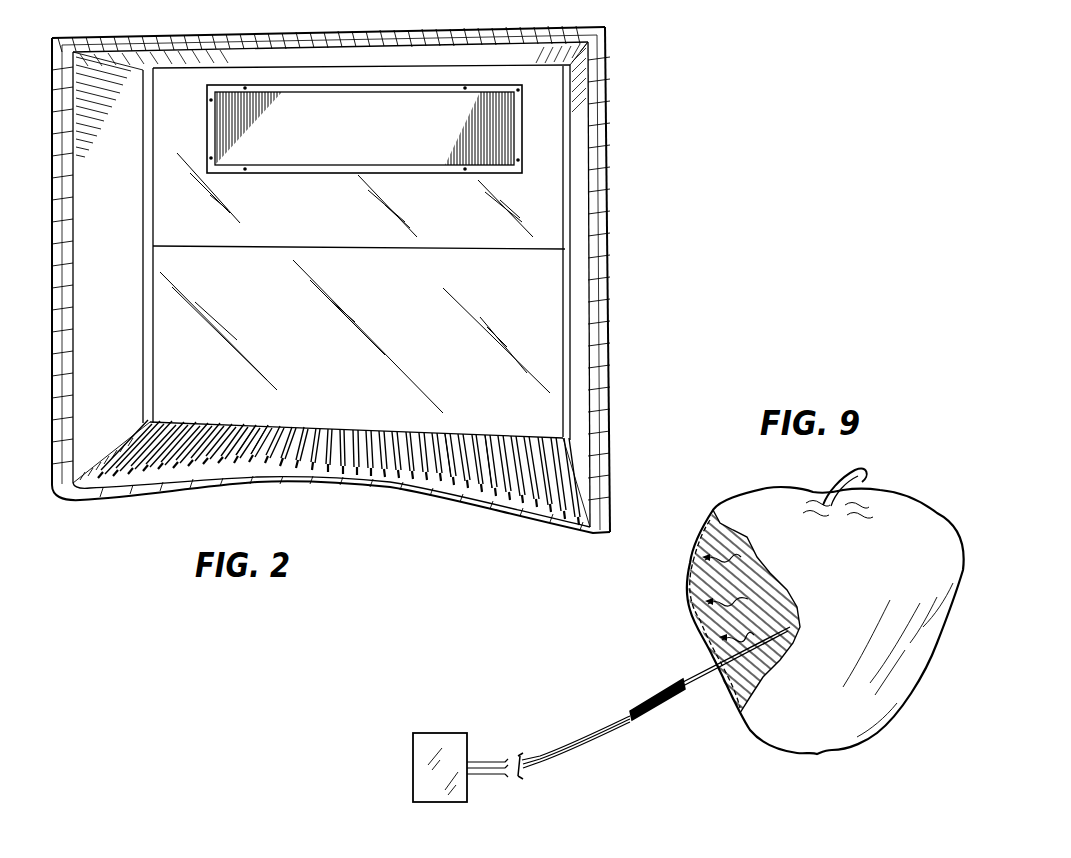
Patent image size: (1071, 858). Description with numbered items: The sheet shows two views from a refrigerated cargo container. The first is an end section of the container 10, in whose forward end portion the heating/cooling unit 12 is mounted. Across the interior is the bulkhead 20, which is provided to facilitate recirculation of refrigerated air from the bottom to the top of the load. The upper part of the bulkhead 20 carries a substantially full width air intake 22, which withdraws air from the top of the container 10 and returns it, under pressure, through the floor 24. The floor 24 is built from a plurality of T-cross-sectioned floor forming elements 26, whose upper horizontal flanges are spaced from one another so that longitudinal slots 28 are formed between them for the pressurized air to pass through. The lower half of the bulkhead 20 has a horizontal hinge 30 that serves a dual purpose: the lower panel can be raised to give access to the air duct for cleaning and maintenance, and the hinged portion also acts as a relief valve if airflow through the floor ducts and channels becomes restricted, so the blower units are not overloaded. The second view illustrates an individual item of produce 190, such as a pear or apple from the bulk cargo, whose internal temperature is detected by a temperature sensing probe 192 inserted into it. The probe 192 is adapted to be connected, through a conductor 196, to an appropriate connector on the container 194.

In FIG. 2, the container 10 is at (634, 70).
In FIG. 2, the heating/cooling unit 12 is at (538, 217).
In FIG. 2, the bulkhead 20 is at (333, 225).
In FIG. 2, the air intake 22 is at (433, 147).
In FIG. 2, the floor 24 is at (368, 428).
In FIG. 2, the T-cross-sectioned floor forming elements 26 is at (285, 427).
In FIG. 2, the longitudinal slots 28 is at (483, 430).
In FIG. 2, the horizontal hinge 30 is at (345, 248).
In FIG. 9, the item of produce 190 is at (888, 503).
In FIG. 9, the temperature sensing probe 192 is at (653, 700).
In FIG. 9, the connector on the container 194 is at (420, 748).
In FIG. 9, the conductor 196 is at (538, 757).